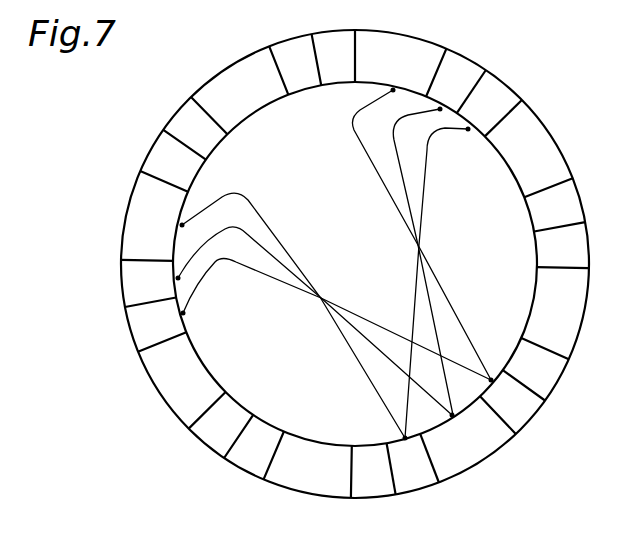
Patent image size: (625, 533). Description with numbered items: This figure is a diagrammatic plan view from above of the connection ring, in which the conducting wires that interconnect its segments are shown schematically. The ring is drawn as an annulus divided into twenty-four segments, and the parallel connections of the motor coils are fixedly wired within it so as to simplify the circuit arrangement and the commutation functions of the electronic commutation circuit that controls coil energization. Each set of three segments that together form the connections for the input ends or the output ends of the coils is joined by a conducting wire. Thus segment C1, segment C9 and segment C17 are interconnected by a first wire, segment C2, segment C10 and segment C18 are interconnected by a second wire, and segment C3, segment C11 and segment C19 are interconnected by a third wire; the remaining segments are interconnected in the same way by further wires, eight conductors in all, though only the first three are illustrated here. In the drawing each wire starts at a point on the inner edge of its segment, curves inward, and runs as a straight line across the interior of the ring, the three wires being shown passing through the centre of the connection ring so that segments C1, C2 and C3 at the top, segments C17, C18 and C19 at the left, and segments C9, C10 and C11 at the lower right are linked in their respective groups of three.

The segment C1 is at (421, 204).
The segment C2 is at (439, 242).
The segment C3 is at (463, 268).
The segment C9 is at (512, 402).
The segment C10 is at (453, 448).
The segment C11 is at (411, 465).
The segment C17 is at (308, 320).
The segment C18 is at (286, 321).
The segment C19 is at (270, 304).